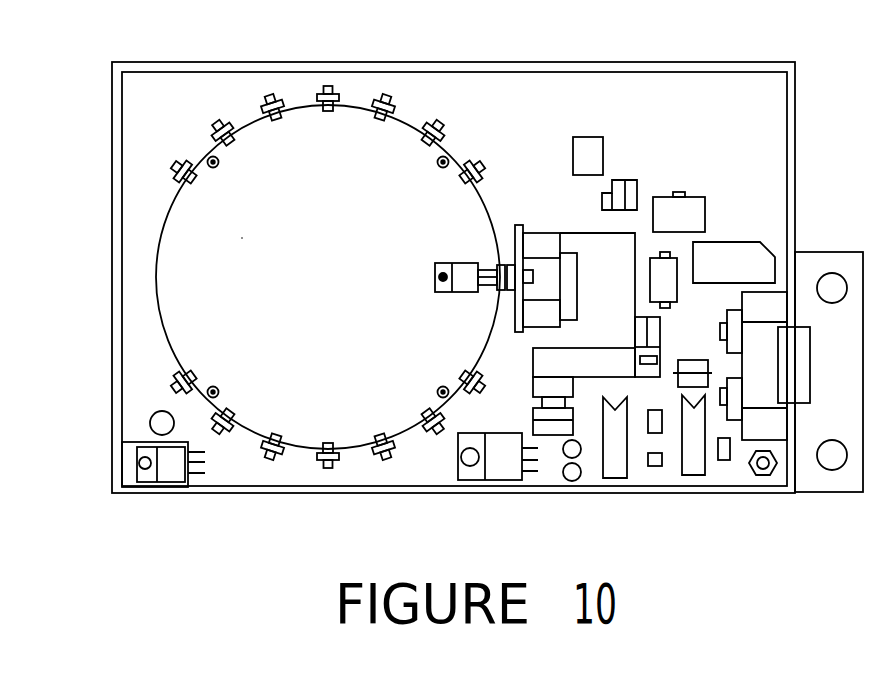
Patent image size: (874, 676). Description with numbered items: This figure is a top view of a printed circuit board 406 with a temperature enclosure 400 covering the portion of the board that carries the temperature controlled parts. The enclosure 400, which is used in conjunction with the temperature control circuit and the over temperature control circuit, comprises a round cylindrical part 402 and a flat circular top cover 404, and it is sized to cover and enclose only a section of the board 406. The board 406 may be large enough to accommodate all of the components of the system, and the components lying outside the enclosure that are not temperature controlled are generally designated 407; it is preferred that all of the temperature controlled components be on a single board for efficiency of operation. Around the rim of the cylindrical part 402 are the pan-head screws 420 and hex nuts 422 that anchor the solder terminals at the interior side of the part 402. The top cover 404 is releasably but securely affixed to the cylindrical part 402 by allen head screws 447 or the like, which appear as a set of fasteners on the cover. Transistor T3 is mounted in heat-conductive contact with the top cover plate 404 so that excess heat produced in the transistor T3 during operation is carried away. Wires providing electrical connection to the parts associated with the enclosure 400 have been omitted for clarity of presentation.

The temperature enclosure 400 is at (171, 201).
The round cylindrical part 402 is at (158, 245).
The flat circular top cover 404 is at (198, 295).
The printed circuit board 406 is at (106, 388).
The non temperature controlled components 407 is at (747, 206).
The pan-head screws 420 is at (220, 129).
The hex nuts 422 is at (236, 130).
The allen head screws 447 is at (216, 167).
The transistor T3 is at (466, 262).